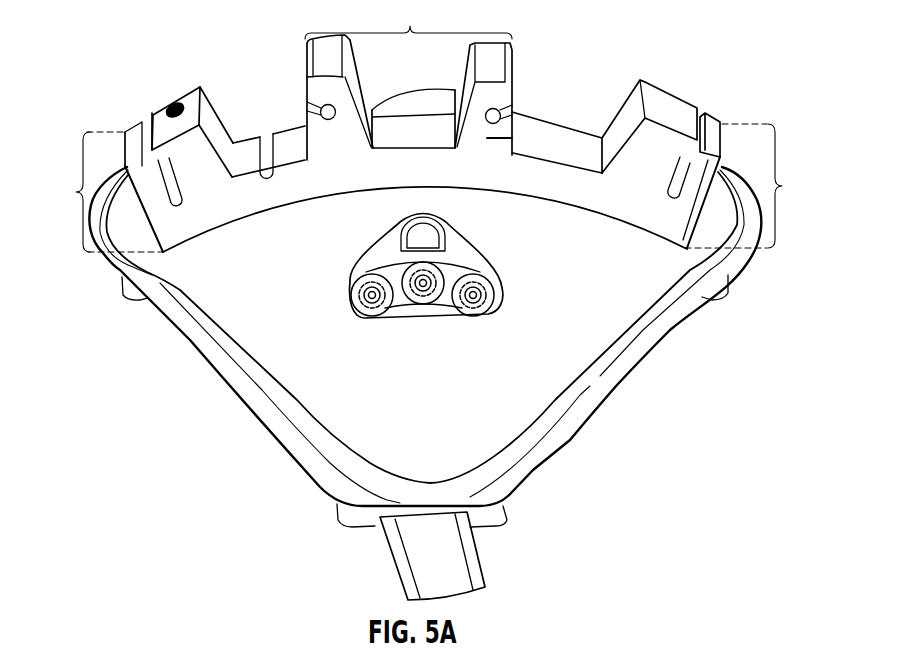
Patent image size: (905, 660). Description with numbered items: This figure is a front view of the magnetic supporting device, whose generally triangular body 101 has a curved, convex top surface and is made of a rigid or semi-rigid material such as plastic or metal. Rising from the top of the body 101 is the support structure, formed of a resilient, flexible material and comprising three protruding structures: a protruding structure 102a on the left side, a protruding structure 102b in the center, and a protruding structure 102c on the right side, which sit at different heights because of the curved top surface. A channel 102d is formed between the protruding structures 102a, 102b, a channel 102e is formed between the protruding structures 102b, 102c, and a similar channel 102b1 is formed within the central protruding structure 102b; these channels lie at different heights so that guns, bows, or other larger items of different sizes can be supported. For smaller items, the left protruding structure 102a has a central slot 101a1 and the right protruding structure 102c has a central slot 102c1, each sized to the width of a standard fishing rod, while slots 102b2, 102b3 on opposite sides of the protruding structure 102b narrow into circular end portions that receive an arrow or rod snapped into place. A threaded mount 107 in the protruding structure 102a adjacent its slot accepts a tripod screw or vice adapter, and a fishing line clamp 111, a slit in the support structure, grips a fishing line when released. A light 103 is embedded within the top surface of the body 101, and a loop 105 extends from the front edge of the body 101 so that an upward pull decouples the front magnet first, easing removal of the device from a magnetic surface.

The body 101 is at (620, 385).
The frame upper edge portion 101a1 is at (141, 111).
The protruding structure 102a is at (103, 182).
The protruding structure 102b is at (410, 80).
The channel 102b1 is at (397, 125).
The slot 102b2 is at (305, 102).
The slot 102b3 is at (515, 86).
The protruding structure 102c is at (751, 148).
The central slot 102c1 is at (700, 108).
The channel 102d is at (263, 142).
The channel 102e is at (570, 152).
The light 103 is at (350, 296).
The loop 105 is at (483, 566).
The threaded mount 107 is at (173, 103).
The fishing line clamp 111 is at (495, 142).